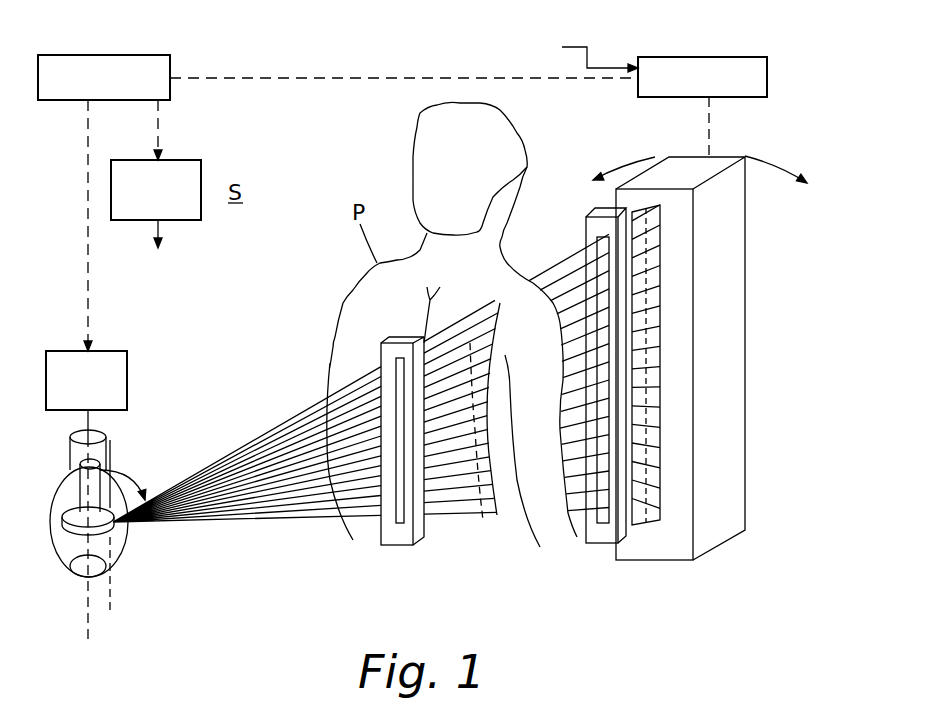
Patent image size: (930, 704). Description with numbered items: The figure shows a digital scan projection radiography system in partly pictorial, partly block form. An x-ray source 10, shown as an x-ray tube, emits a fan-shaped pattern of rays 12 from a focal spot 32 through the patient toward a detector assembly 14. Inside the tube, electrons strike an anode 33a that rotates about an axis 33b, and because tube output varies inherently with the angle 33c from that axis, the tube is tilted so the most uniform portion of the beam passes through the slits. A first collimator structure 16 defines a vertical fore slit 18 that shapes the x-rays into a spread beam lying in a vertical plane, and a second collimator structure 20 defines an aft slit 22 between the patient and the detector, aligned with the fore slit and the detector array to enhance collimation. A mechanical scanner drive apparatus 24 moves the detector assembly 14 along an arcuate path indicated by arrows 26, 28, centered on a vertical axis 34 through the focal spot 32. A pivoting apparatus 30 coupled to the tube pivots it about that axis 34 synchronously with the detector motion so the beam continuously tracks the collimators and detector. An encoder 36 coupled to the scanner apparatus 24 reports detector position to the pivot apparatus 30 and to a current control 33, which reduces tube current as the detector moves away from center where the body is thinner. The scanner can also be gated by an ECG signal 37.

The x-ray source 10 is at (83, 578).
The collection of rays 12 is at (258, 438).
The detector assembly 14 is at (682, 563).
The first collimator structure 16 is at (418, 540).
The fore slit 18 is at (381, 348).
The second collimator structure 20 is at (590, 212).
The aft slit 22 is at (632, 277).
The mechanical scanner drive apparatus 24 is at (695, 57).
The arrow 26 is at (623, 165).
The arrow 28 is at (790, 165).
The pivoting apparatus 30 is at (128, 378).
The focal spot 32 is at (108, 537).
The current control 33 is at (176, 160).
The anode 33a is at (68, 538).
The axis 33b is at (80, 505).
The angle 33c is at (144, 477).
The vertical axis 34 is at (112, 456).
The encoder 36 is at (150, 55).
The ECG signal 37 is at (603, 66).